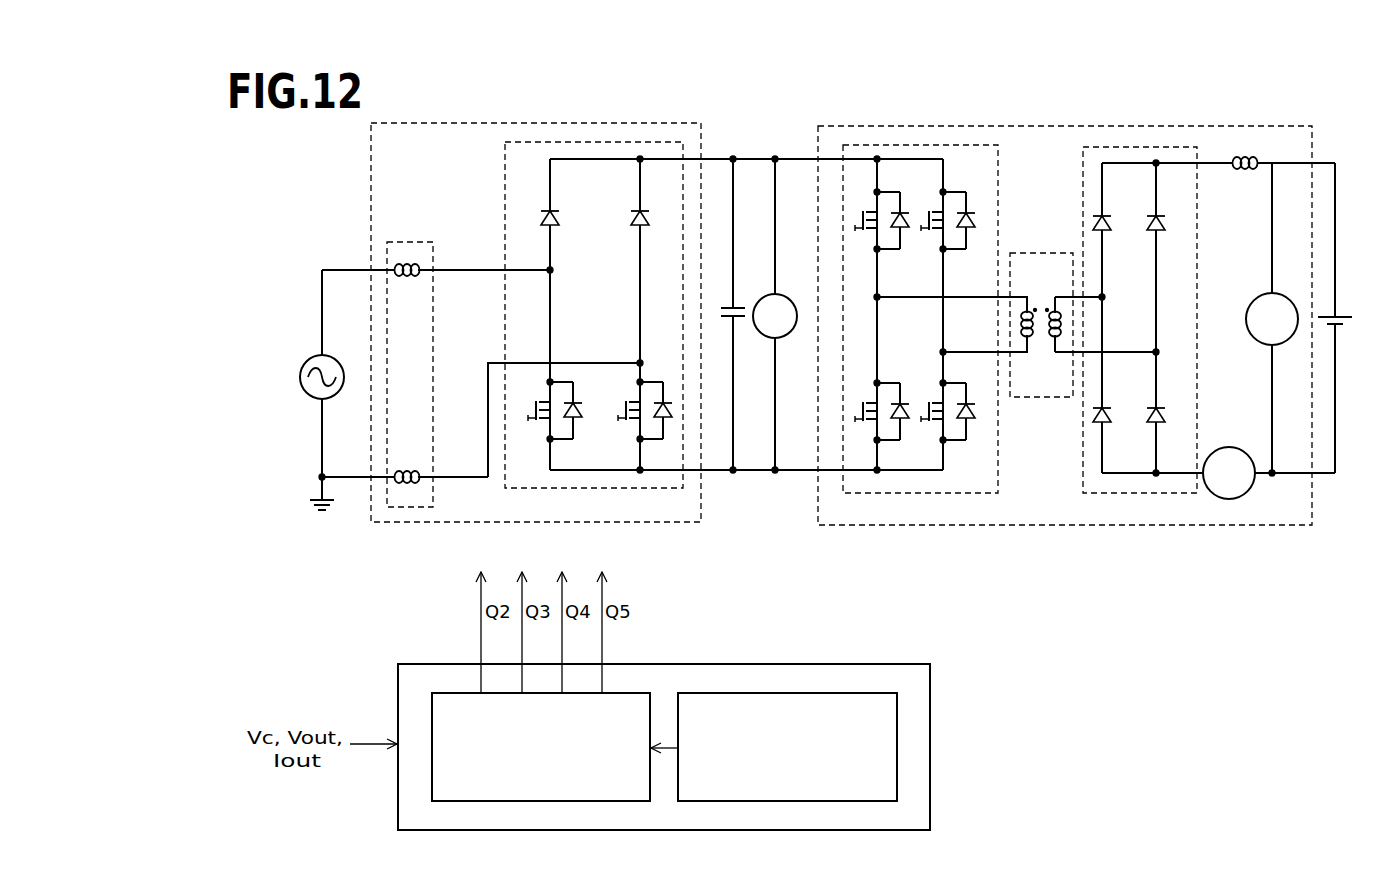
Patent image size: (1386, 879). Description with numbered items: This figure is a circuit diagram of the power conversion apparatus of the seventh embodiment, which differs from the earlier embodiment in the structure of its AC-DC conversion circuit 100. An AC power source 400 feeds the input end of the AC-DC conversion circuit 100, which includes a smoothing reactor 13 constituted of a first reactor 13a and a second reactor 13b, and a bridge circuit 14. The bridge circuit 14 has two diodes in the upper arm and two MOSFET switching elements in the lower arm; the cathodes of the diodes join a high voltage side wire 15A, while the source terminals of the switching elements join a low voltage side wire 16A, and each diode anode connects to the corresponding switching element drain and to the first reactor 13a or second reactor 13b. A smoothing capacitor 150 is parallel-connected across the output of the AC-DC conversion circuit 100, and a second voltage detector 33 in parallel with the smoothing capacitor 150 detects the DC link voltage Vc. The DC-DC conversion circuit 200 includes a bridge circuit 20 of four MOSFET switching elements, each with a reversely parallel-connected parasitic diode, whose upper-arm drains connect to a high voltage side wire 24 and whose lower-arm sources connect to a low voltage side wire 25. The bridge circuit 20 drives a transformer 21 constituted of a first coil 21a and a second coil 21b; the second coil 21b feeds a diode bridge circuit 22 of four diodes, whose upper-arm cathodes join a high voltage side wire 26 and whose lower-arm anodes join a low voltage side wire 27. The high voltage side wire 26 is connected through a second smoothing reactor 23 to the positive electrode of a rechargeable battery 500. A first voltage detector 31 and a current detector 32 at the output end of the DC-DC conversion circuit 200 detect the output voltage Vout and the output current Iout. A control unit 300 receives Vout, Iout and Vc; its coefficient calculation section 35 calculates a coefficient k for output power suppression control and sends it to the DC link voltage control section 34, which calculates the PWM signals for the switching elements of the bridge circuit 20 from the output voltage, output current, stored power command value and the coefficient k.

The AC-DC conversion circuit 100 is at (478, 122).
The smoothing reactor 13 is at (418, 240).
The first reactor 13a is at (420, 266).
The second reactor 13b is at (420, 472).
The AC power source 400 is at (315, 355).
The bridge circuit 14 is at (658, 140).
The high voltage side wire 15A is at (595, 158).
The low voltage side wire 16A is at (597, 473).
The smoothing capacitor 150 is at (740, 305).
The second voltage detector 33 is at (783, 295).
The DC-DC conversion circuit 200 is at (1072, 124).
The bridge circuit 20 is at (972, 143).
The high voltage side wire 24 is at (915, 158).
The low voltage side wire 25 is at (917, 473).
The transformer 21 is at (1050, 252).
The first coil 21a is at (1032, 340).
The second coil 21b is at (1052, 340).
The diode bridge circuit 22 is at (1165, 145).
The high voltage side wire 26 is at (1122, 162).
The low voltage side wire 27 is at (1128, 476).
The second smoothing reactor 23 is at (1255, 160).
The first voltage detector 31 is at (1266, 296).
The current detector 32 is at (1230, 448).
The rechargeable battery 500 is at (1338, 316).
The control unit 300 is at (918, 663).
The DC link voltage control section 34 is at (452, 691).
The coefficient calculation section 35 is at (700, 692).